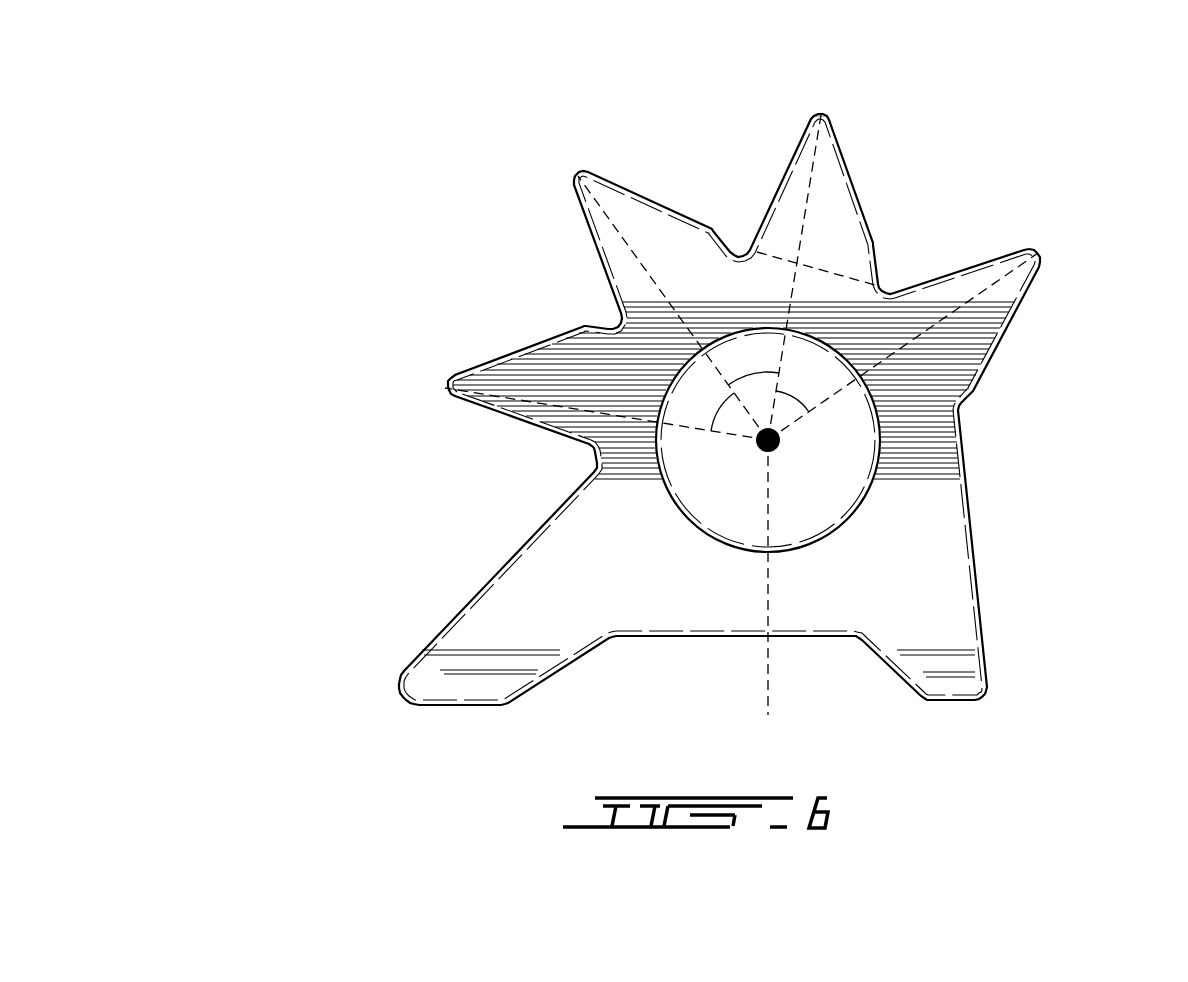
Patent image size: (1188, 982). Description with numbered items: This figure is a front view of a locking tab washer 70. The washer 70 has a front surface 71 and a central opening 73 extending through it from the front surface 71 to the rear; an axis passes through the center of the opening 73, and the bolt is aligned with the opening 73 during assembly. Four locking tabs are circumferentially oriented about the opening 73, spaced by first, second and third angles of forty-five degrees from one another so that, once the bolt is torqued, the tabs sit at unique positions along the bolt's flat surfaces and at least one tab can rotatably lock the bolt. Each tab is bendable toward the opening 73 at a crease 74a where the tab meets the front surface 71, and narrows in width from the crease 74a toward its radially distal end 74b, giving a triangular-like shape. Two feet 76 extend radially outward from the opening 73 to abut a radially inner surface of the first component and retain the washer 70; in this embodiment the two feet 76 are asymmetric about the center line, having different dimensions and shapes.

The locking tab washer 70 is at (322, 182).
The front surface 71 is at (923, 540).
The central opening 73 is at (850, 436).
The crease 74a is at (835, 268).
The radially distal end 74b is at (830, 116).
The feet 76 is at (468, 683).